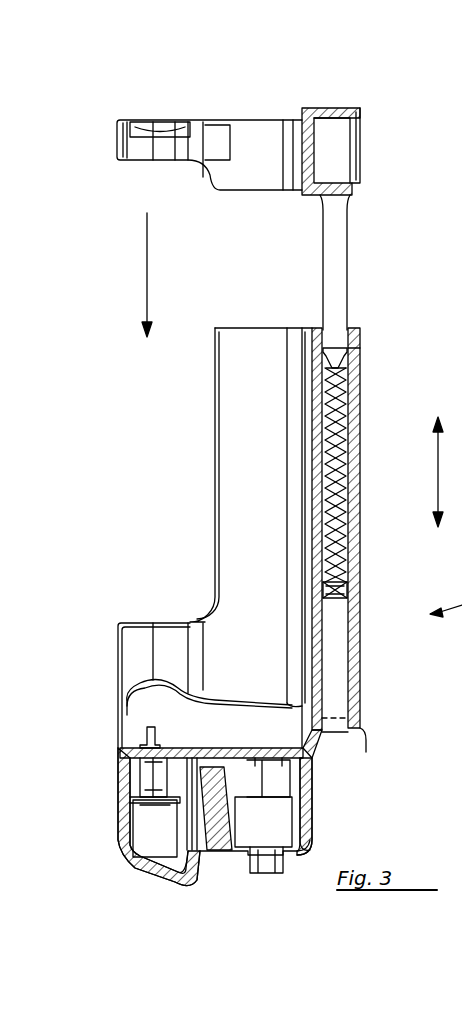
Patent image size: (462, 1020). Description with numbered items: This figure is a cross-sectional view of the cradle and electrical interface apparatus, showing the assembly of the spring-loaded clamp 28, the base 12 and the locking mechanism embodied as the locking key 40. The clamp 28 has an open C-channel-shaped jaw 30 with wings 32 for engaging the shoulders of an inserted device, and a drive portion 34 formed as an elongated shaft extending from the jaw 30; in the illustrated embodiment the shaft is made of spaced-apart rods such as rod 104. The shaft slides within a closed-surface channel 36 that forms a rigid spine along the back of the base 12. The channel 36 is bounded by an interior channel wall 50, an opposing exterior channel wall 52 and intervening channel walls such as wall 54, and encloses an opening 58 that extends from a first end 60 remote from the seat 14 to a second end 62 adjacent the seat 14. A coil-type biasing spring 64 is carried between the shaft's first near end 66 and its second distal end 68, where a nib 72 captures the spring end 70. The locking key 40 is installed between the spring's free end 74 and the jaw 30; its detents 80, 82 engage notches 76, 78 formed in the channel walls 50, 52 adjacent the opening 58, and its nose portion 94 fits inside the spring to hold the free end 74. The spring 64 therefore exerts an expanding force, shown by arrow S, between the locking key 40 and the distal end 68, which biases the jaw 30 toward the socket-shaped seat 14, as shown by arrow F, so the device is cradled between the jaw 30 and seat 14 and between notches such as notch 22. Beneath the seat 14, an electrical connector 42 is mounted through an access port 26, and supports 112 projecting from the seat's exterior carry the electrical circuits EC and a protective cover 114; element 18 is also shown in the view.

The base 12 is at (142, 496).
The socket-shaped seat 14 is at (183, 748).
The housing body 18 is at (225, 352).
The notch 22 is at (158, 616).
The access port 26 is at (125, 742).
The clamp 28 is at (428, 150).
The jaw 30 is at (310, 108).
The wings 32 is at (118, 128).
The drive portion 34 is at (372, 283).
The closed-surface channel 36 is at (362, 668).
The locking key 40 is at (340, 330).
The electrical connector 42 is at (150, 772).
The interior channel wall 50 is at (312, 508).
The exterior channel wall 52 is at (360, 458).
The intervening channel wall 54 is at (335, 703).
The opening 58 is at (304, 310).
The first end 60 is at (318, 330).
The second end 62 is at (358, 733).
The biasing spring 64 is at (338, 423).
The first near end 66 is at (349, 205).
The second distal end 68 is at (338, 604).
The spring end 70 is at (322, 584).
The nib 72 is at (346, 565).
The free end 74 is at (356, 366).
The notch 76 is at (292, 370).
The notch 78 is at (380, 344).
The detent 80 is at (300, 352).
The detent 82 is at (353, 352).
The nose portion 94 is at (320, 382).
The rod 104 is at (349, 258).
The supports 112 is at (275, 780).
The cover 114 is at (138, 836).
The electrical circuits EC is at (284, 826).
The biasing force arrow F is at (138, 275).
The spring force arrow S is at (430, 472).